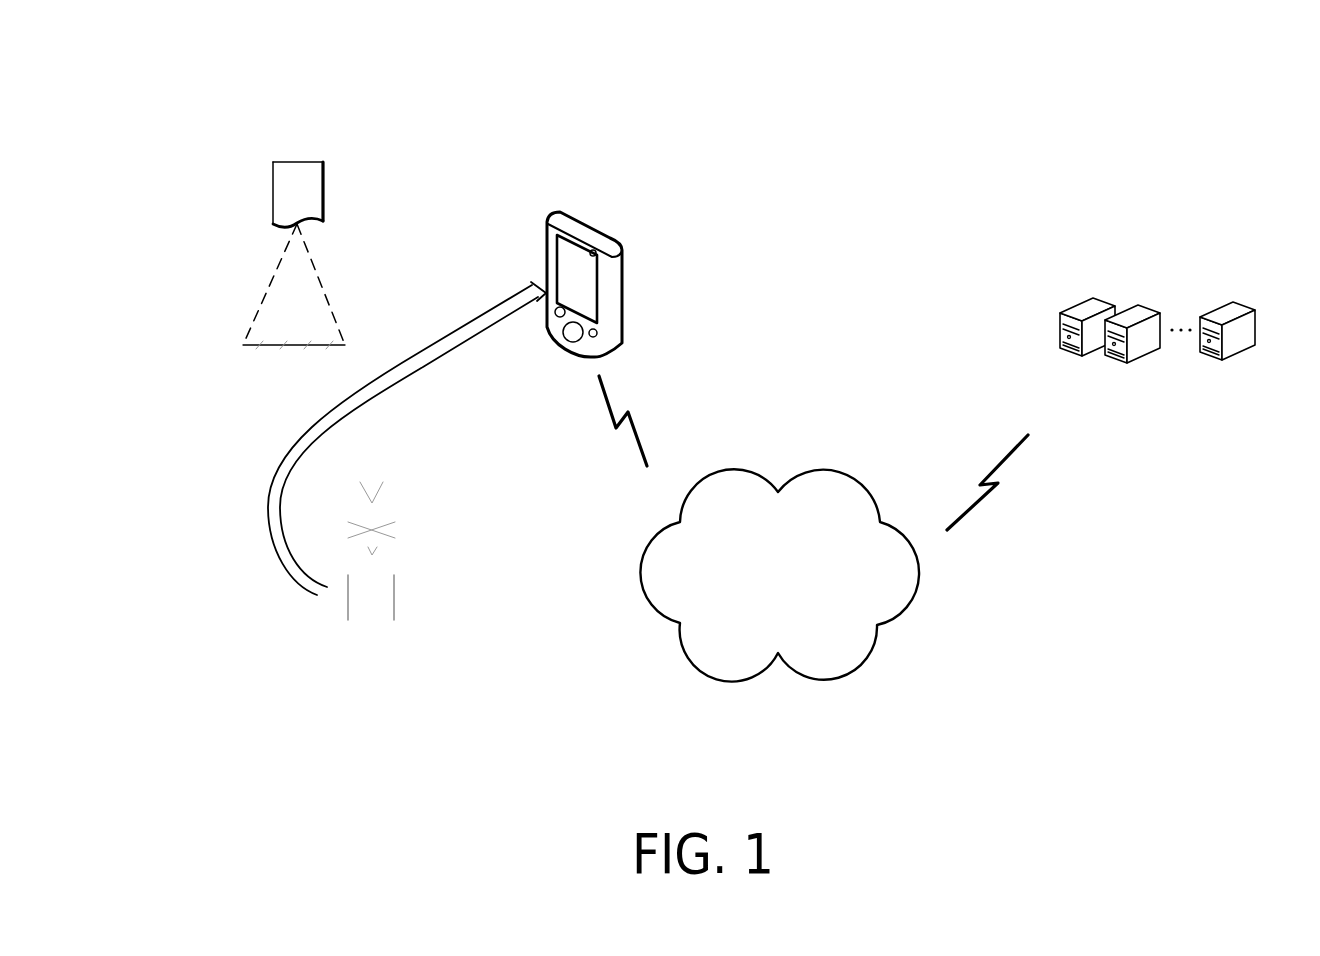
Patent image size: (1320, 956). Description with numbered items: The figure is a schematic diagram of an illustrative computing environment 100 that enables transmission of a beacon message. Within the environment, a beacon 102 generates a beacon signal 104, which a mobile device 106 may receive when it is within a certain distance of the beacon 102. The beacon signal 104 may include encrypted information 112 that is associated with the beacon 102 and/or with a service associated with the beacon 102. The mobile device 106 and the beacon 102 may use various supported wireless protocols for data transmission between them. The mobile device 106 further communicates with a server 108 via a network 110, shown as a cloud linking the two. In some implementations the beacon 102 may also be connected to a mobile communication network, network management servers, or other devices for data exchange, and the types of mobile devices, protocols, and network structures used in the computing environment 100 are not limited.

The computing environment 100 is at (1227, 66).
The beacon 102 is at (395, 590).
The beacon signal 104 is at (292, 347).
The mobile device 106 is at (563, 213).
The server 108 is at (1065, 315).
The network 110 is at (779, 575).
The encrypted information 112 is at (273, 190).